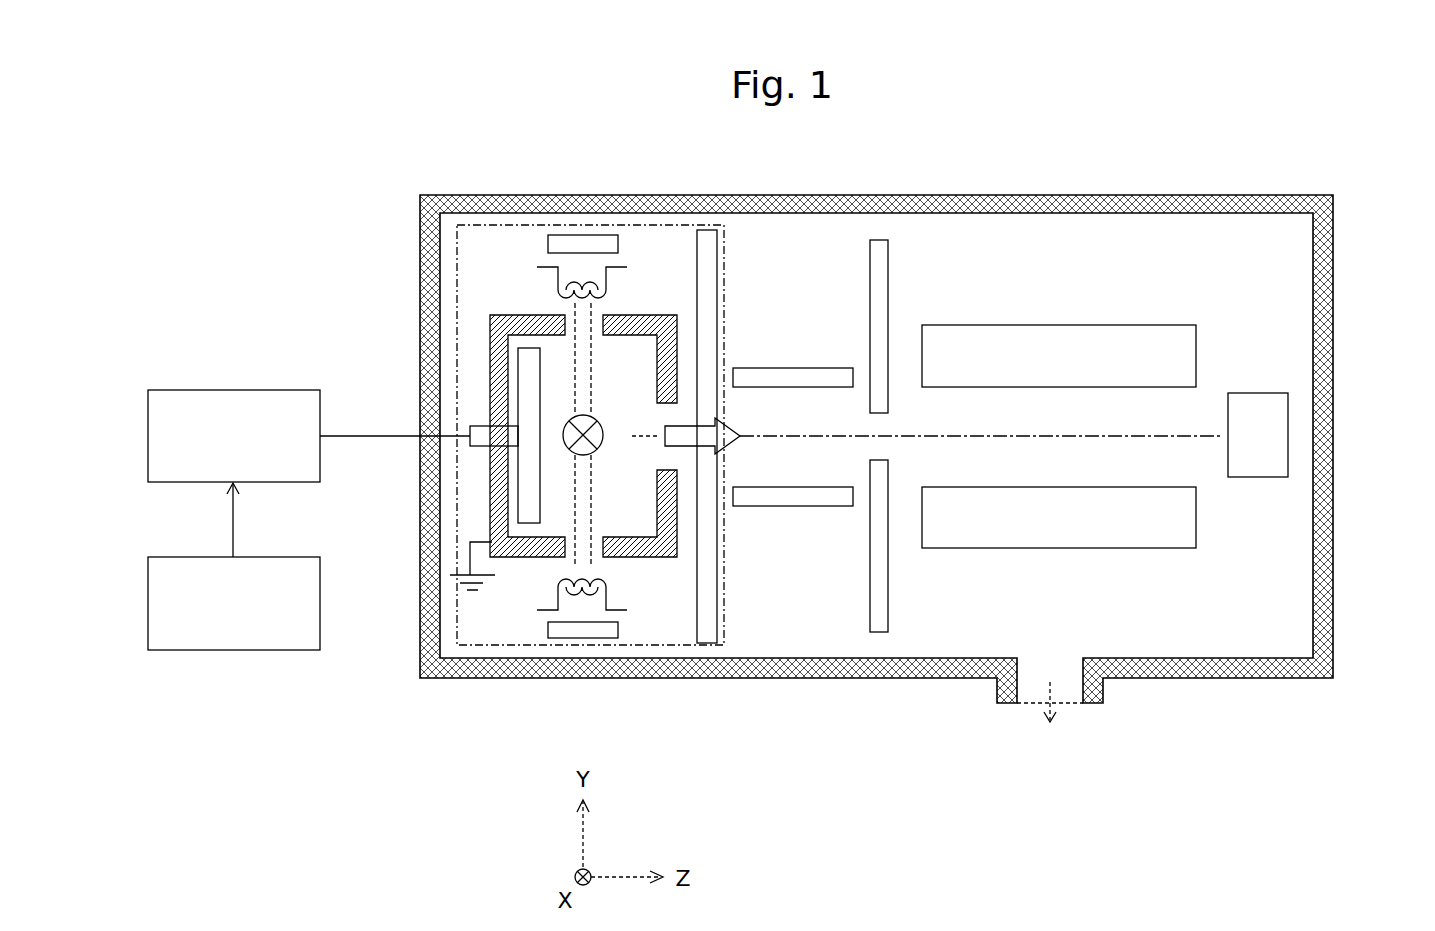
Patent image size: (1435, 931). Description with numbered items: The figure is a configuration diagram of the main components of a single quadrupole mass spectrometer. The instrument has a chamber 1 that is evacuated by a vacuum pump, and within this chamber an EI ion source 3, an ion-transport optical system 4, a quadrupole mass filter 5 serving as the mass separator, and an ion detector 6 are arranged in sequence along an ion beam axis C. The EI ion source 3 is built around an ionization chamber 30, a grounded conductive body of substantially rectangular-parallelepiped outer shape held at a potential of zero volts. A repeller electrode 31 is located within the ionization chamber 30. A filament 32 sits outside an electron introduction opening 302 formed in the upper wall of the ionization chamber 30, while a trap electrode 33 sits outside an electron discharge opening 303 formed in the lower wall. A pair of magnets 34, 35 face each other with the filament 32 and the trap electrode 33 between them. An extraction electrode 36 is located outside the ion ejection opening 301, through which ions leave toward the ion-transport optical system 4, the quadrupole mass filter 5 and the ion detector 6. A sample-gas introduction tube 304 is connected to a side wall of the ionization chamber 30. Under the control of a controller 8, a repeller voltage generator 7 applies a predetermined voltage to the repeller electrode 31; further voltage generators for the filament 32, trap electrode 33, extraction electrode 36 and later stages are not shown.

The chamber 1 is at (768, 679).
The EI ion source 3 is at (488, 225).
The ion-transport optical system 4 is at (887, 190).
The quadrupole mass filter 5 is at (1112, 330).
The ion detector 6 is at (1292, 412).
The repeller voltage generator 7 is at (177, 390).
The controller 8 is at (175, 557).
The ionization chamber 30 is at (490, 325).
The repeller electrode 31 is at (517, 377).
The filament 32 is at (555, 290).
The trap electrode 33 is at (555, 591).
The magnet 34 is at (548, 237).
The magnet 35 is at (557, 640).
The extraction electrode 36 is at (718, 280).
The ion ejection opening 301 is at (662, 455).
The electron introduction opening 302 is at (607, 313).
The electron discharge opening 303 is at (592, 548).
The sample-gas introduction tube 304 is at (565, 450).
The ion beam axis C is at (940, 433).